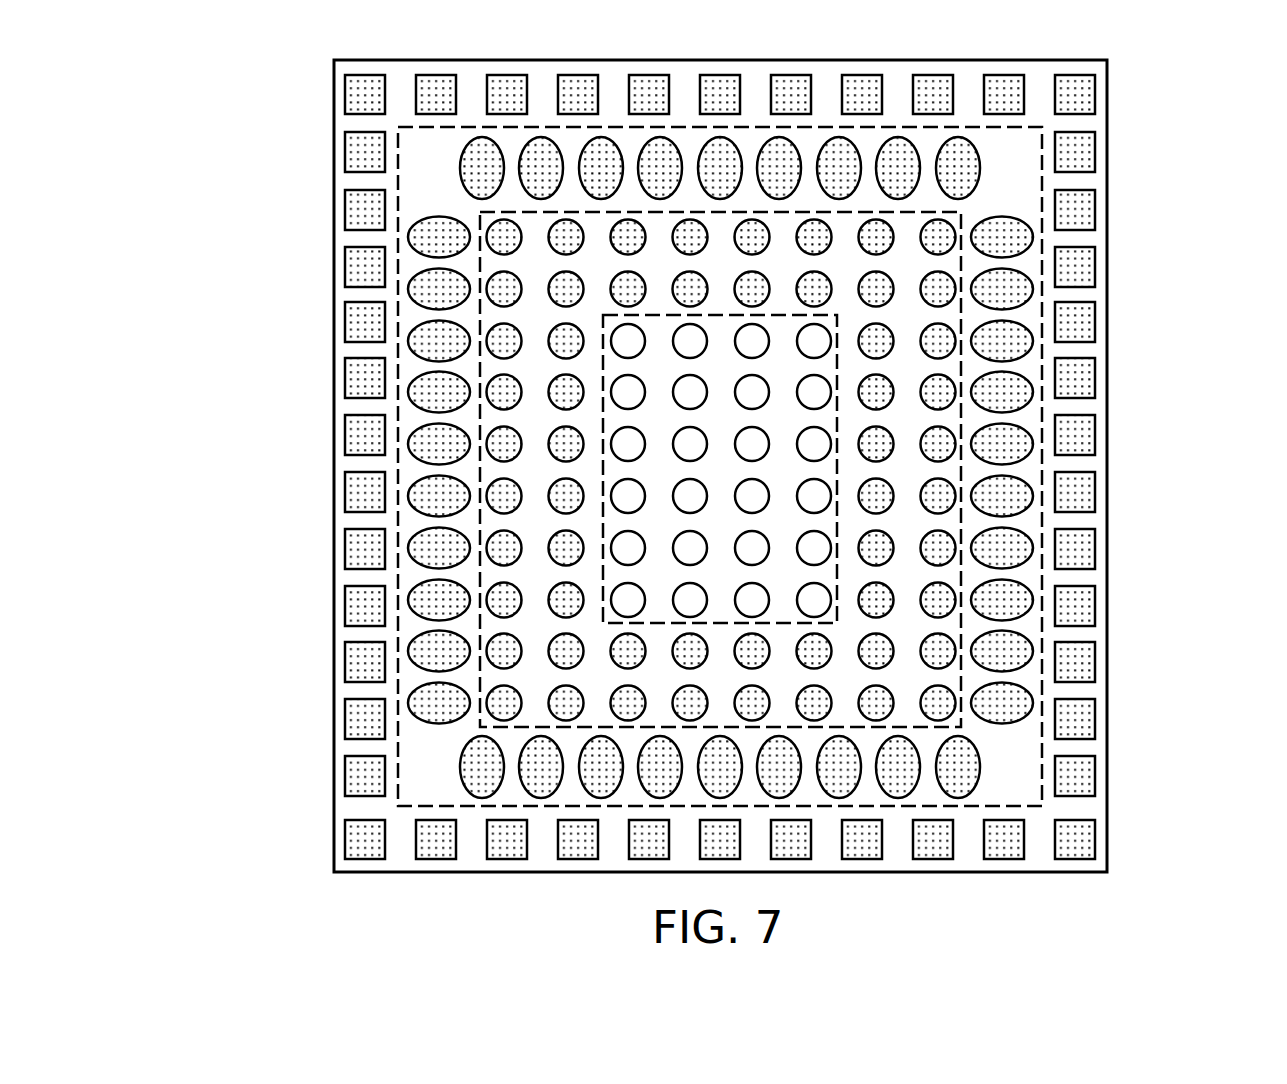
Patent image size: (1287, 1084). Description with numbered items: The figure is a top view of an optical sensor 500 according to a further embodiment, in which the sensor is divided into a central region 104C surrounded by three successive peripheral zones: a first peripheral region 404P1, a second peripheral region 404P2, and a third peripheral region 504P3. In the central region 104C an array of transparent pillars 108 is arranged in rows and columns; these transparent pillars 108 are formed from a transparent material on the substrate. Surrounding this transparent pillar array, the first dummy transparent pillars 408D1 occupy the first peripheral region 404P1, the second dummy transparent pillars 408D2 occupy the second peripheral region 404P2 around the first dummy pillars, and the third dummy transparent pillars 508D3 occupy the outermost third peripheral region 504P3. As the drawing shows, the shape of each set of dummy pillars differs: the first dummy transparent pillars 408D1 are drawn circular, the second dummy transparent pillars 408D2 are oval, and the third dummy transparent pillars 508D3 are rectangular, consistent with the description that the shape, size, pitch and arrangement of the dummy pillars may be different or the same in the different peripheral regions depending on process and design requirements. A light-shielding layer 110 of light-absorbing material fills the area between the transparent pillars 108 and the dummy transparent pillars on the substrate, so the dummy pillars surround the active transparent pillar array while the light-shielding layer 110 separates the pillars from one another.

The optical sensor 500 is at (216, 141).
The transparent pillars 108 is at (625, 390).
The central region 104C is at (632, 520).
The first peripheral region 404P1 is at (505, 626).
The second peripheral region 404P2 is at (425, 748).
The third peripheral region 504P3 is at (370, 812).
The first dummy transparent pillars 408D1 is at (877, 288).
The second dummy transparent pillars 408D2 is at (1013, 292).
The third dummy transparent pillars 508D3 is at (1067, 380).
The light-shielding layer 110 is at (1037, 795).